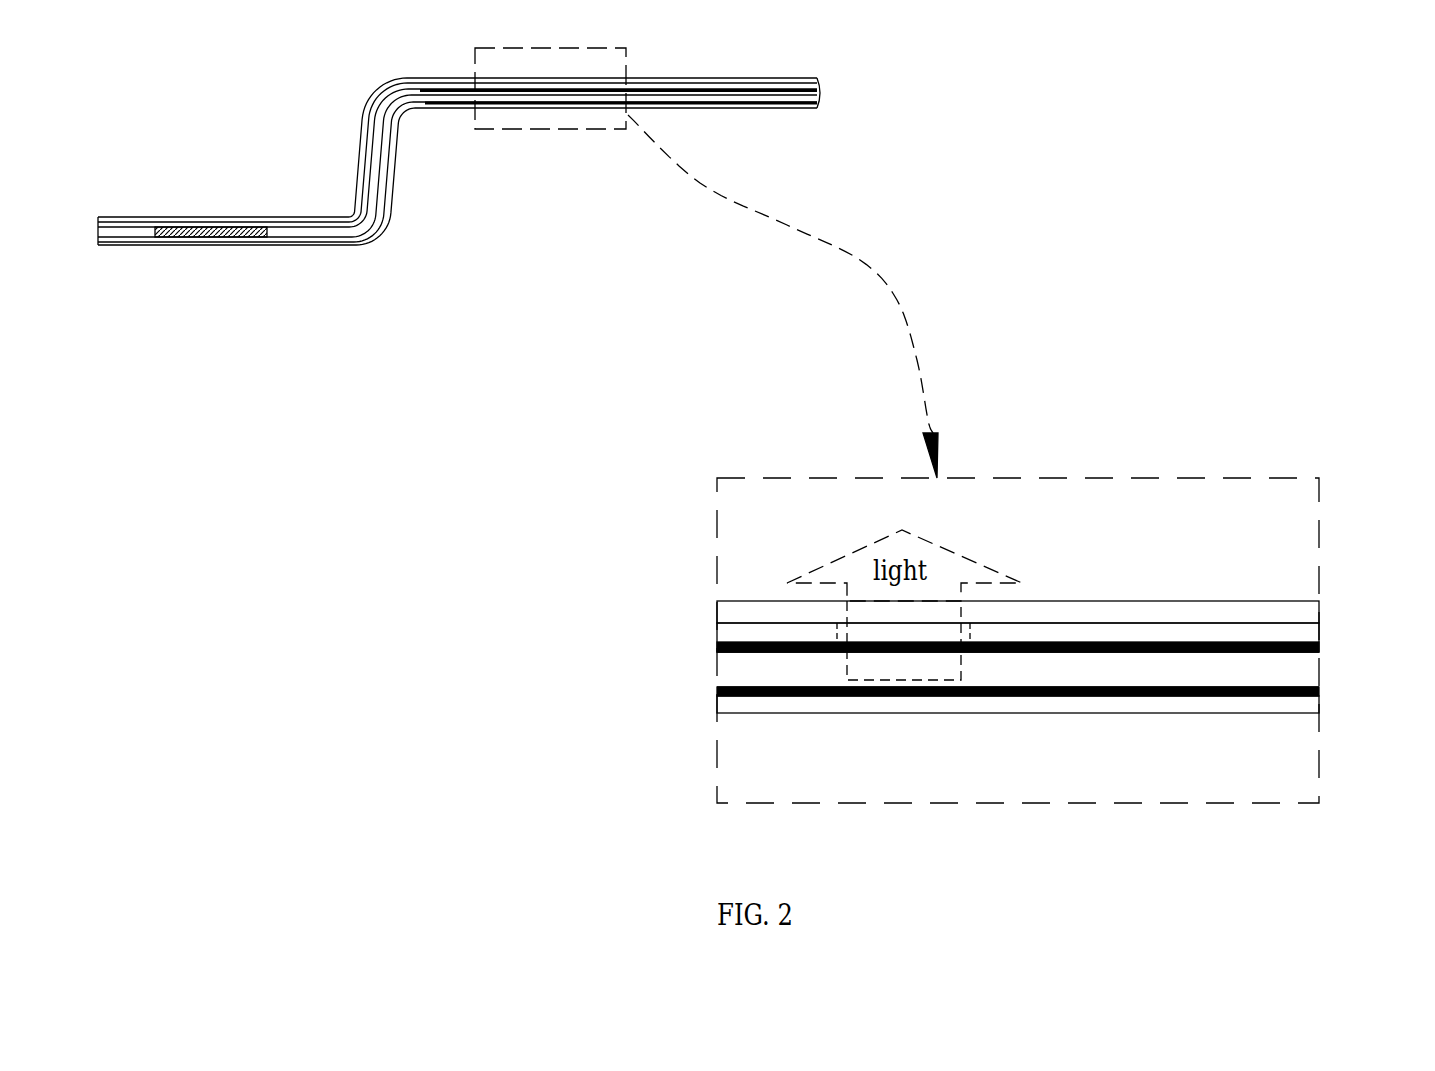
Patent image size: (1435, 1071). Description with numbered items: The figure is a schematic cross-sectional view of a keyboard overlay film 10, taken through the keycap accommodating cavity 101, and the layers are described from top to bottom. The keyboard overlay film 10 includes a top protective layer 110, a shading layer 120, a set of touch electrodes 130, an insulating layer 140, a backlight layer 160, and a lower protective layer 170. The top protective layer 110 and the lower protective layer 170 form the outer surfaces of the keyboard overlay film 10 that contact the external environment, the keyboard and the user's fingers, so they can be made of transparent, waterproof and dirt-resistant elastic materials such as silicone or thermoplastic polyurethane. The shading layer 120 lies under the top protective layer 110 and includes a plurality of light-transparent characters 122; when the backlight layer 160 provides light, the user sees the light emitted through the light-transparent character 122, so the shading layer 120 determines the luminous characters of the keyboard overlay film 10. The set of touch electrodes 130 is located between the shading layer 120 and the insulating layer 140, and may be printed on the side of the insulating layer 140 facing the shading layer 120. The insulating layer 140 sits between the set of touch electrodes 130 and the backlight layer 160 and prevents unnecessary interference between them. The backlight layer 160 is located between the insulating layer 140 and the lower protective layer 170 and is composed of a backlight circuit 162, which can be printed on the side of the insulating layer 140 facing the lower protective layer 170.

The keyboard overlay film 10 is at (518, 263).
The keycap accommodating cavity 101 is at (423, 137).
The top protective layer 110 is at (1298, 611).
The shading layer 120 is at (1299, 635).
The light-transparent character 122 is at (968, 638).
The set of touch electrodes 130 is at (717, 646).
The insulating layer 140 is at (1299, 667).
The backlight layer 160 is at (931, 692).
The backlight circuit 162 is at (717, 690).
The lower protective layer 170 is at (1299, 702).